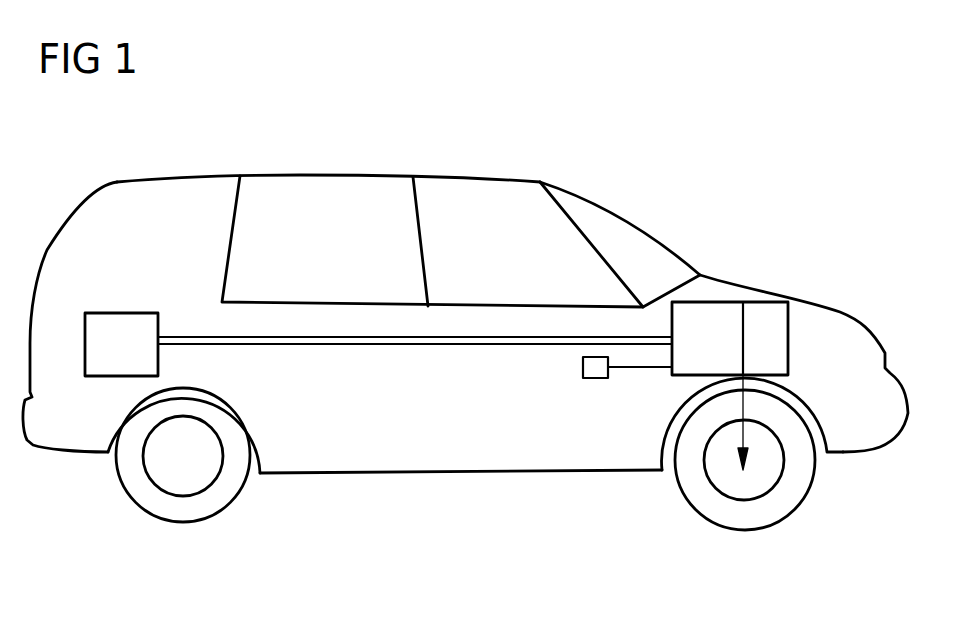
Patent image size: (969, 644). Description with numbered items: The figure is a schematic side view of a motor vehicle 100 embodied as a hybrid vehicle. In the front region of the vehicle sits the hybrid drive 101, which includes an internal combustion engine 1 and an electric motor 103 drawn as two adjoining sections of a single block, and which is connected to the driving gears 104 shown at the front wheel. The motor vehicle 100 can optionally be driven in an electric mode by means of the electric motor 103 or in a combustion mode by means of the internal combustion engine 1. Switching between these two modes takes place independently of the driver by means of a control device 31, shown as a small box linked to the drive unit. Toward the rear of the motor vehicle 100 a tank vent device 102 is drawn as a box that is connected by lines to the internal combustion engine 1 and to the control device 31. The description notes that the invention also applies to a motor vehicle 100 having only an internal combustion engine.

The motor vehicle 100 is at (684, 150).
The hybrid drive 101 is at (763, 213).
The tank vent device 102 is at (122, 313).
The internal combustion engine 1 is at (698, 313).
The electric motor 103 is at (758, 313).
The control device 31 is at (583, 366).
The driving gears 104 is at (742, 512).